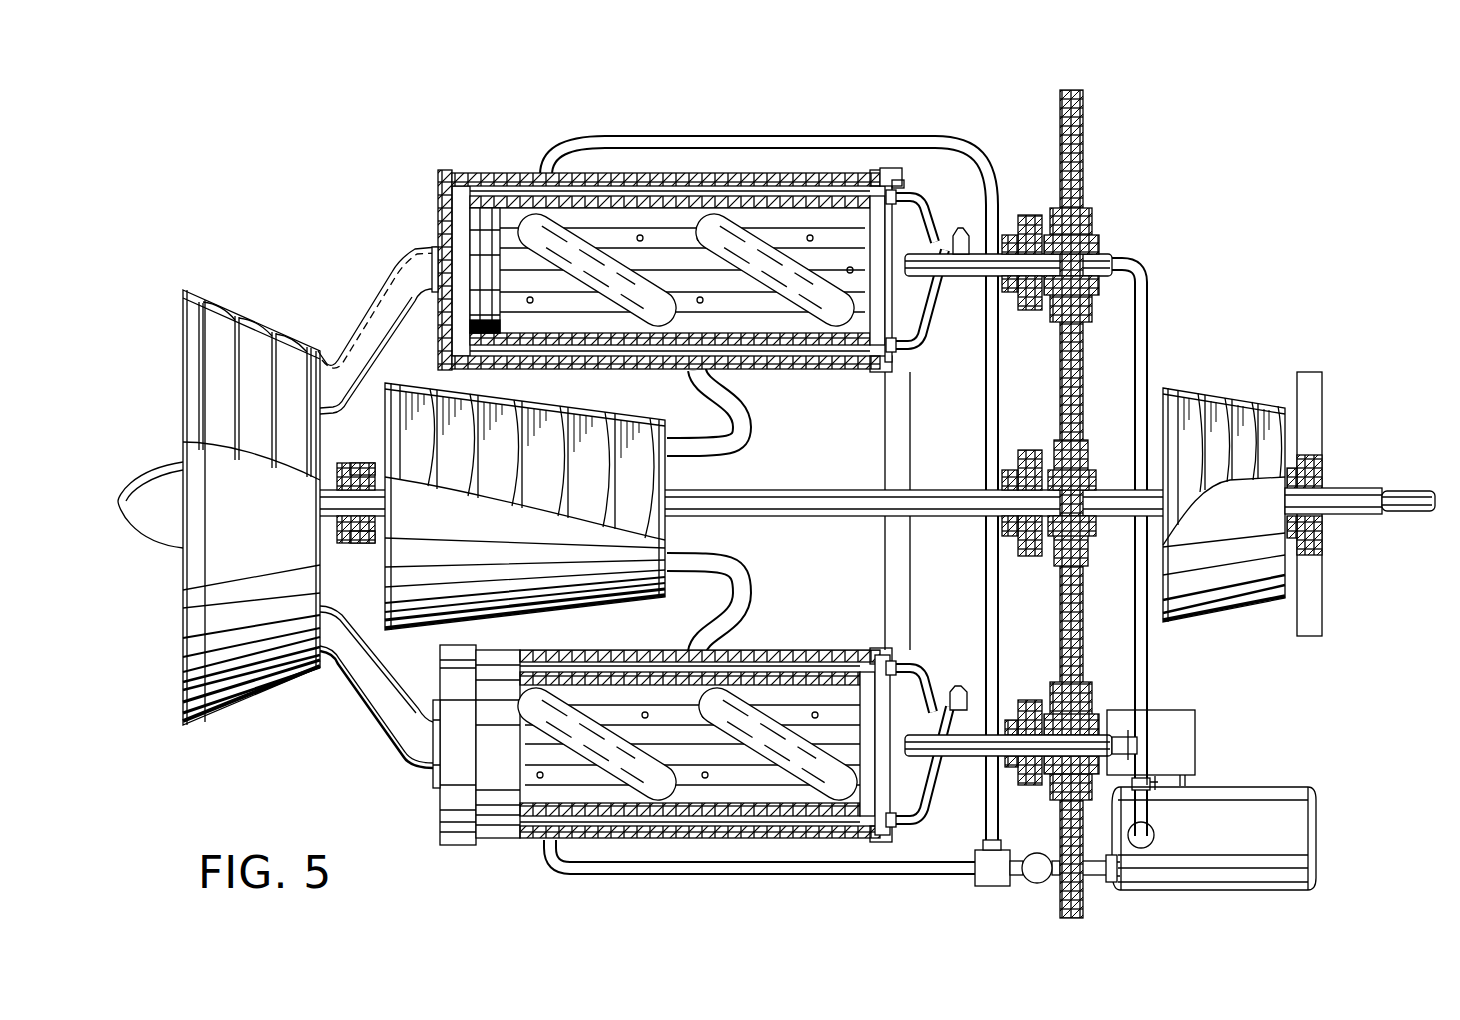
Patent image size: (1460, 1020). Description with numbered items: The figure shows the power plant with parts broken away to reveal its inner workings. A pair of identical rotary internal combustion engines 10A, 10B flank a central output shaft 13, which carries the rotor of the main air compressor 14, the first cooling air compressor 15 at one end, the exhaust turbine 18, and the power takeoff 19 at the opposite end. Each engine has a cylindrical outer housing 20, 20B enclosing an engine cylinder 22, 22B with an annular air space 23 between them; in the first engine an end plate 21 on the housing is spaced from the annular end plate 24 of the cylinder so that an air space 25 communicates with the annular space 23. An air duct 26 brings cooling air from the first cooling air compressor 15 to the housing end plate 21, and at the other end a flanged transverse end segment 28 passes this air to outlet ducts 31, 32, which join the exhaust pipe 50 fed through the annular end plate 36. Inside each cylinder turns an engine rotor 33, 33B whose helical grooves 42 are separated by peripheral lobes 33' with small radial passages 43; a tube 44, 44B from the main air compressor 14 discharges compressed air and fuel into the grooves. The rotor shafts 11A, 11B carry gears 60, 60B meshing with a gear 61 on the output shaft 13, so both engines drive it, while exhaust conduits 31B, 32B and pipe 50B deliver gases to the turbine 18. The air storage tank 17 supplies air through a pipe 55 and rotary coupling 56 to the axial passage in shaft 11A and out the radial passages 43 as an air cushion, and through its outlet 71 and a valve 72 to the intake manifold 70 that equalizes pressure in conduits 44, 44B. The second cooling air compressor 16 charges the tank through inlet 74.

The rotary internal combustion engine 10A is at (674, 213).
The rotary internal combustion engine 10B is at (703, 760).
The rotary engine shaft 11A is at (972, 278).
The rotary engine shaft 11B is at (1008, 745).
The output shaft 13 is at (815, 492).
The main air compressor 14 is at (555, 402).
The first cooling air compressor 15 is at (183, 385).
The second cooling air compressor 16 is at (1196, 722).
The air storage tank 17 is at (1207, 841).
The exhaust turbine 18 is at (1237, 610).
The power takeoff 19 is at (1413, 515).
The outer housing 20 is at (465, 178).
The outer housing 20B is at (762, 648).
The end plate 21 is at (440, 200).
The engine cylinder 22 is at (718, 205).
The engine cylinder 22B is at (812, 652).
The annular air space 23 is at (655, 192).
The annular end plate 24 is at (487, 300).
The air space 25 is at (460, 232).
The air duct 26 is at (368, 305).
The flanged transverse end segment 28 is at (885, 178).
The outlet duct 31 is at (910, 198).
The outlet duct 31B is at (912, 664).
The outlet duct 32 is at (925, 335).
The outlet duct 32B is at (930, 802).
The engine rotor 33 is at (686, 194).
The peripheral lobe 33' is at (597, 214).
The engine rotor 33B is at (758, 808).
The annular end plate 36 is at (885, 300).
The helical groove 42 is at (768, 240).
The radial passage 43 is at (682, 270).
The tube 44 is at (750, 428).
The tube 44B is at (752, 578).
The exhaust pipe 50 is at (965, 240).
The exhaust pipe 50B is at (955, 686).
The pipe 55 is at (1148, 665).
The rotary coupling 56 is at (1118, 258).
The gear 60 is at (1068, 504).
The gear 60B is at (1085, 605).
The gear 61 is at (1078, 458).
The air intake manifold 70 is at (842, 135).
The outlet 71 is at (1110, 884).
The valve 72 is at (1030, 880).
The inlet 74 is at (1188, 784).